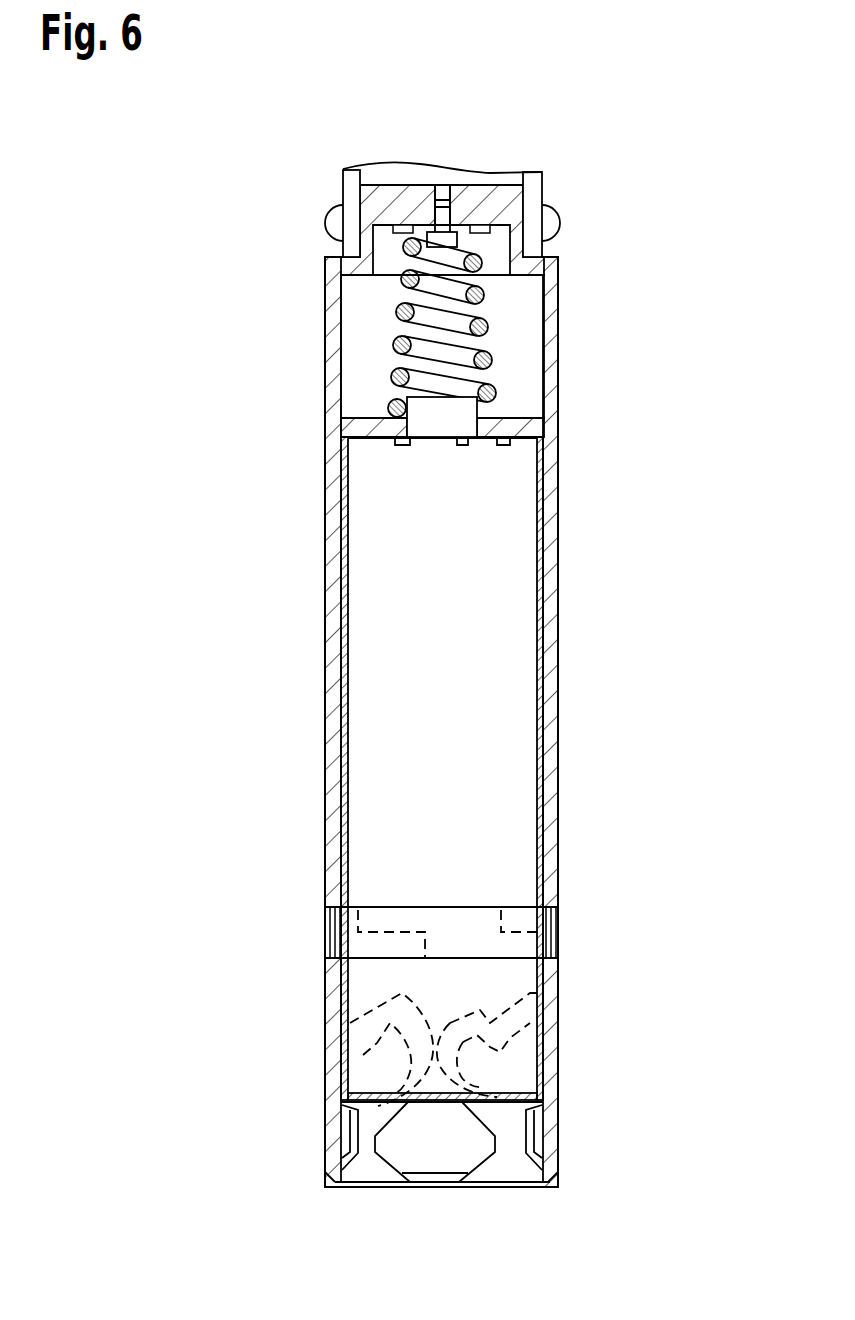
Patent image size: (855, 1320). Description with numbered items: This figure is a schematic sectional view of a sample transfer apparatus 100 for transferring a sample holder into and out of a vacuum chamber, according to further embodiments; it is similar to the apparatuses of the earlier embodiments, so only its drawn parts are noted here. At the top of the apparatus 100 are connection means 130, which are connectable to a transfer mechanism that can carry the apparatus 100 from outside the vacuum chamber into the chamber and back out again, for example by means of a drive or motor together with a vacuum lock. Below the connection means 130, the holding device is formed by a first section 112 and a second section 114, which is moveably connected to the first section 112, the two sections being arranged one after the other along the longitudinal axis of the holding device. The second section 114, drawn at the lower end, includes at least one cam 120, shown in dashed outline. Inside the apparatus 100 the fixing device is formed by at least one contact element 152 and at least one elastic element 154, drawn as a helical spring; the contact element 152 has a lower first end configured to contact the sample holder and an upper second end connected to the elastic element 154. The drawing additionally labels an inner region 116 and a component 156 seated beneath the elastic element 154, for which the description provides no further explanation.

The sample transfer apparatus 100 is at (277, 143).
The first section 112 is at (325, 743).
The second section 114 is at (325, 1046).
The interior chamber 116 is at (512, 674).
The cam 120 is at (480, 1063).
The connection means 130 is at (578, 124).
The contact element 152 is at (538, 546).
The elastic element 154 is at (478, 327).
The plunger block 156 is at (468, 408).